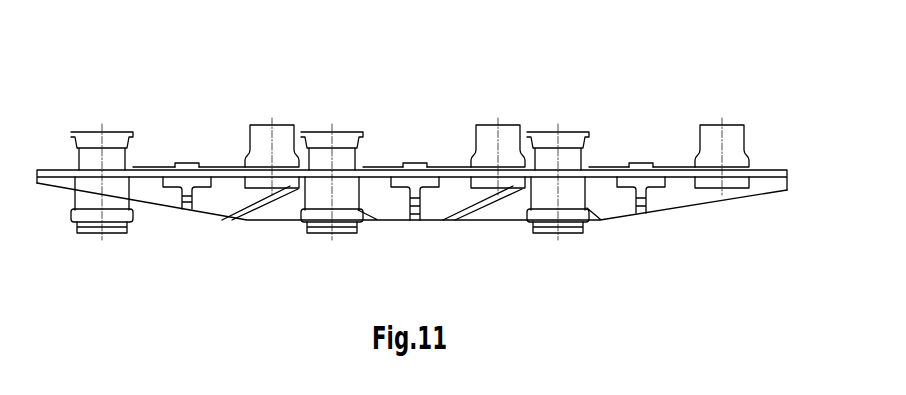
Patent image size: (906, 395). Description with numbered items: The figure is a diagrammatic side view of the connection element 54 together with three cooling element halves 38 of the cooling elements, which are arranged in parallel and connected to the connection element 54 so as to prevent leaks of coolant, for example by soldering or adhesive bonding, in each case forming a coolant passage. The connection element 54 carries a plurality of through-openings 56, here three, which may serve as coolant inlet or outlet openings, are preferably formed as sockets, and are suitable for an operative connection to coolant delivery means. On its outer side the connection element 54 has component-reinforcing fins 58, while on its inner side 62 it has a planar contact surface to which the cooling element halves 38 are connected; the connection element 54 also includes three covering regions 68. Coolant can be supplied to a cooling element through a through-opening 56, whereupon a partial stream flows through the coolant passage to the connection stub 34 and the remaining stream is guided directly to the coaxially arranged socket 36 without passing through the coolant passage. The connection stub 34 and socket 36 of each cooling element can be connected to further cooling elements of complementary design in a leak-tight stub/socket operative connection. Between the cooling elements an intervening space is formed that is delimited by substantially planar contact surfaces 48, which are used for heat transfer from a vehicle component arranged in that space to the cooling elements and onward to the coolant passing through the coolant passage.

The connection stub 34 is at (263, 140).
The socket 36 is at (118, 138).
The cooling element half 38 is at (97, 113).
The contact surface 48 is at (215, 160).
The connection element 54 is at (760, 192).
The through-opening 56 is at (93, 210).
The component-reinforcing fin 58 is at (655, 280).
The inner side 62 is at (773, 165).
The covering region 68 is at (273, 188).